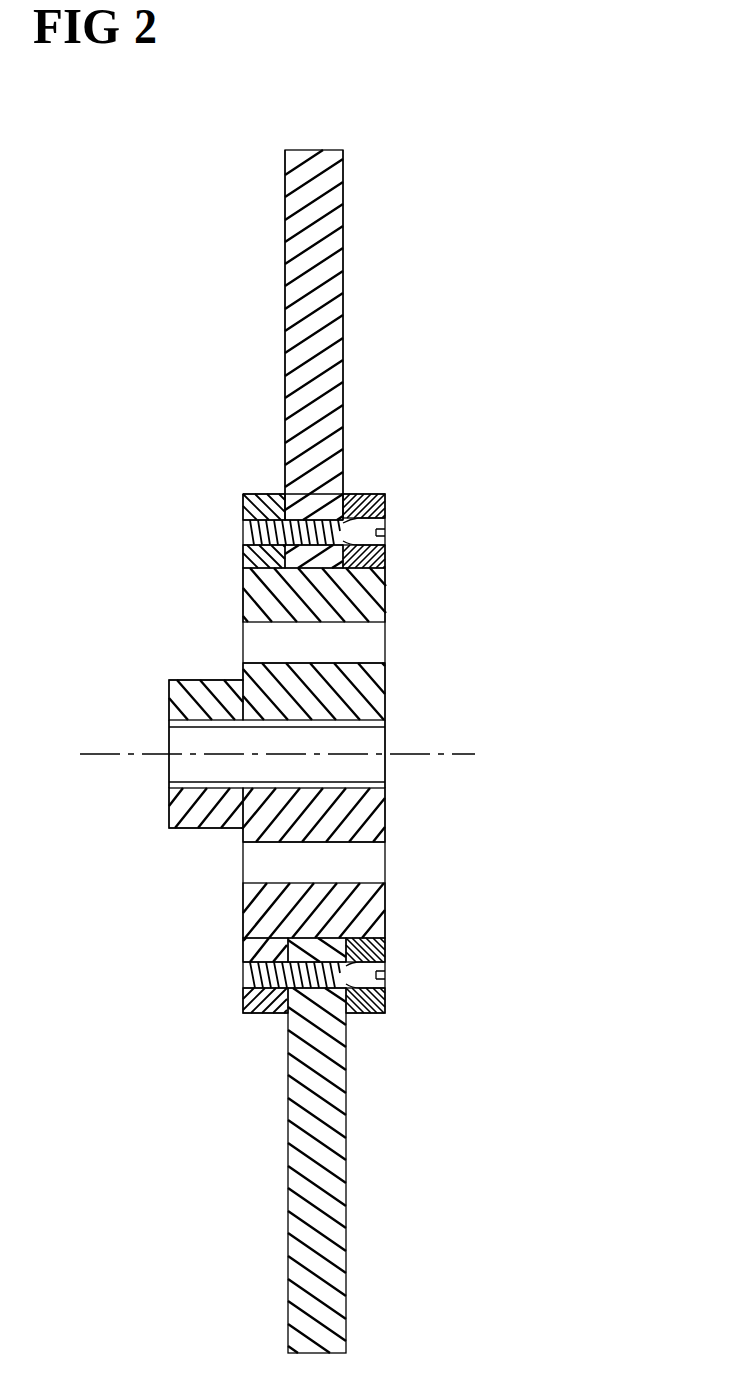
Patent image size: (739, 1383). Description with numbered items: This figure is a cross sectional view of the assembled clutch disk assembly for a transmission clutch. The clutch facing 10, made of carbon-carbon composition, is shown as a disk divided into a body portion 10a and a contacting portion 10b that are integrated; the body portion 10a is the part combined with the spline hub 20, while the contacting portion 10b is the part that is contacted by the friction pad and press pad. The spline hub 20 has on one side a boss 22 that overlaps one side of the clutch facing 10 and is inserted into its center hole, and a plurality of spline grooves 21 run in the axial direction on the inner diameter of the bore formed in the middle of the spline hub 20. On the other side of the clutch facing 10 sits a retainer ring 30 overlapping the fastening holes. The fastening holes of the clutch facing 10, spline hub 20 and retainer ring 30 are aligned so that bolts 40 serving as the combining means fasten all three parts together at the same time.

The clutch facing 10 is at (537, 262).
The body portion 10a is at (343, 336).
The contacting portion 10b is at (285, 249).
The spline hub 20 is at (537, 618).
The spline grooves 21 is at (385, 705).
The boss 22 is at (385, 615).
The retainer ring 30 is at (385, 1010).
The bolts 40 is at (385, 958).